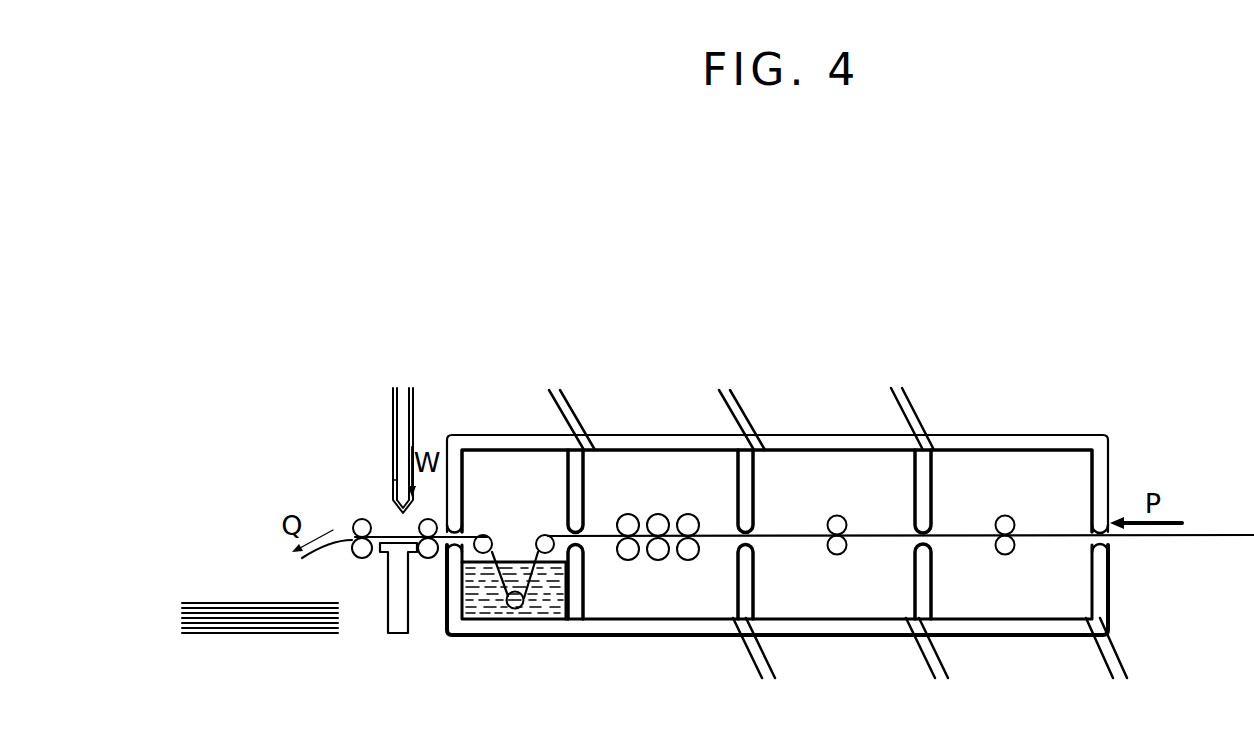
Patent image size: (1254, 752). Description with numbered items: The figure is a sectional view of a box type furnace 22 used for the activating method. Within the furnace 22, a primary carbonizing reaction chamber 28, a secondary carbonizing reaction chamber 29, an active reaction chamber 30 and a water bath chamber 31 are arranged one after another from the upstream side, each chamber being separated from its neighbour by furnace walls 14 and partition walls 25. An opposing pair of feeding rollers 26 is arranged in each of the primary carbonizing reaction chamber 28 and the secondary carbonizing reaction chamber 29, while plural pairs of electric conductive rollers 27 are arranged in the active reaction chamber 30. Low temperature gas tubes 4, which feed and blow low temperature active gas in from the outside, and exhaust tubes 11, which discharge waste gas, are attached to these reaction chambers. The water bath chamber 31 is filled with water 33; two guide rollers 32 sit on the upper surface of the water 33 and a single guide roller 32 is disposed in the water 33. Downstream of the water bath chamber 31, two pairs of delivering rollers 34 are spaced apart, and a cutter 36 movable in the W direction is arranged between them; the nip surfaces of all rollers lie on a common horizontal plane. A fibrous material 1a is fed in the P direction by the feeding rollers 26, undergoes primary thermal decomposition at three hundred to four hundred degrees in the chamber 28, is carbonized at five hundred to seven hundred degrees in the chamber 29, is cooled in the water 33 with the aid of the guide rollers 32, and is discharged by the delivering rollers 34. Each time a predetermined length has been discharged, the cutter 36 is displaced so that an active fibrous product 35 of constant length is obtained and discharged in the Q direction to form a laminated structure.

The fibrous material 1a is at (1212, 519).
The low temperature gas tube 4 is at (577, 422).
The exhaust tube 11 is at (753, 663).
The furnace wall 14 is at (511, 443).
The box type furnace 22 is at (1079, 425).
The partition wall 25 is at (585, 472).
The feeding rollers 26 is at (836, 555).
The electric conductive rollers 27 is at (628, 560).
The primary carbonizing reaction chamber 28 is at (1045, 598).
The secondary carbonizing reaction chamber 29 is at (864, 598).
The active reaction chamber 30 is at (686, 596).
The water bath chamber 31 is at (483, 489).
The guide roller 32 is at (513, 610).
The water 33 is at (542, 606).
The delivering rollers 34 is at (363, 560).
The active fibrous product 35 is at (303, 631).
The cutter 36 is at (392, 496).